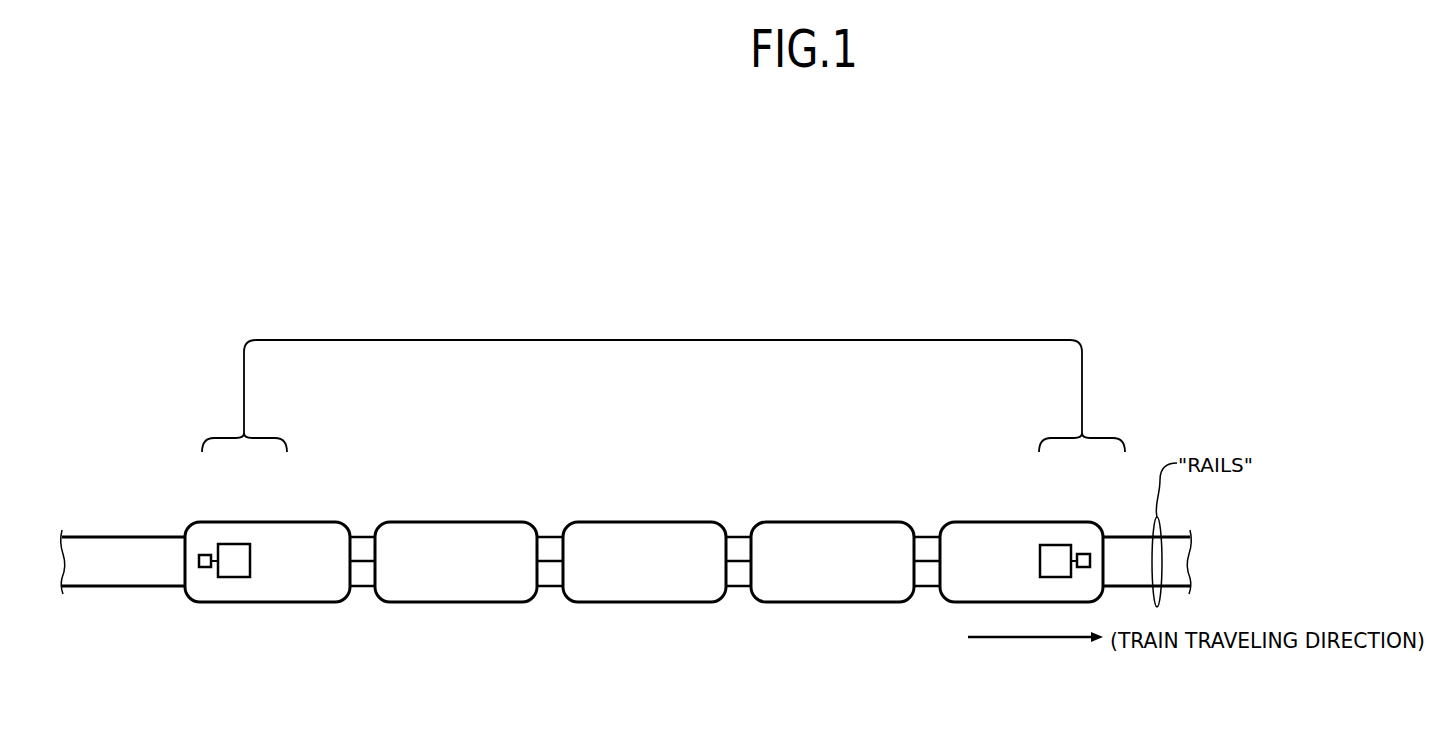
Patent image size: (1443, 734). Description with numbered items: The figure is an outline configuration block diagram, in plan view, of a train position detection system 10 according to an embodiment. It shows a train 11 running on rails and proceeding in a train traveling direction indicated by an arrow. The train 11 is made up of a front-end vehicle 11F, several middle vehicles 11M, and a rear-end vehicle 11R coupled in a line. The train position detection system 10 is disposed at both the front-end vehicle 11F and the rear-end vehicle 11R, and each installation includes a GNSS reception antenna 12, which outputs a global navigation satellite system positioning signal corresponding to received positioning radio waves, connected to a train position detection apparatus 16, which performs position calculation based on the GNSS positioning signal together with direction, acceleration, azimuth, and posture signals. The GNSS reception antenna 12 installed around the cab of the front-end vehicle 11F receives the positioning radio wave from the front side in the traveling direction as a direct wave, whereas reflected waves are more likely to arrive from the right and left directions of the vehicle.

The train position detection system 10 is at (1082, 340).
The train 11 is at (692, 435).
The rear-end vehicle 11R is at (282, 522).
The middle vehicles 11M is at (468, 522).
The front-end vehicle 11F is at (982, 522).
The GNSS reception antenna 12 is at (205, 555).
The train position detection apparatus 16 is at (232, 544).